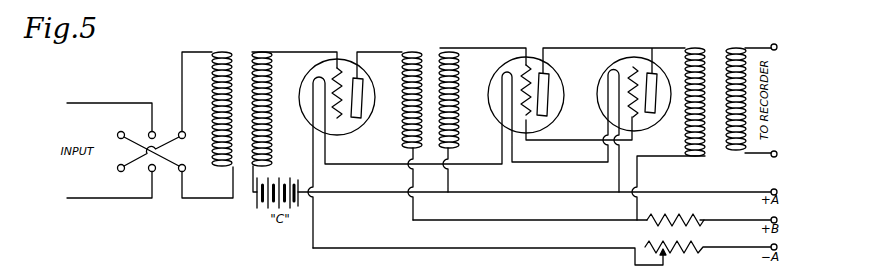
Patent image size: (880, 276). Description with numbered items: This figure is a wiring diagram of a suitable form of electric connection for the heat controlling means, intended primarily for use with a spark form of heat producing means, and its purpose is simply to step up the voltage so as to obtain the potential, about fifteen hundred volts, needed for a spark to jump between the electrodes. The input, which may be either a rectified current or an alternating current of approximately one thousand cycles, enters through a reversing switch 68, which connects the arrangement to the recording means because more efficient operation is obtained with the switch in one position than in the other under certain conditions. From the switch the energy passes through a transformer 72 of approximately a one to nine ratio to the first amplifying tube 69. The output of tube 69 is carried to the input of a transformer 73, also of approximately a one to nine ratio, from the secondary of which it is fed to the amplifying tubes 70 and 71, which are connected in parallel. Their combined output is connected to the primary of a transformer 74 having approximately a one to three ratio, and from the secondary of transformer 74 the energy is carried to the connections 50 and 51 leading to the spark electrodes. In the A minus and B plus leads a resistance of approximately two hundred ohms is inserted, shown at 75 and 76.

The connection of spark electrode 50 is at (774, 39).
The connection of spark electrode 51 is at (770, 162).
The reversing switch 68 is at (164, 133).
The amplifying tube 69 is at (343, 133).
The amplifying tube 70 is at (549, 124).
The amplifying tube 71 is at (648, 131).
The transformer 72 is at (239, 57).
The transformer 73 is at (427, 57).
The transformer 74 is at (710, 56).
The resistance 75 is at (693, 212).
The resistance 76 is at (704, 246).